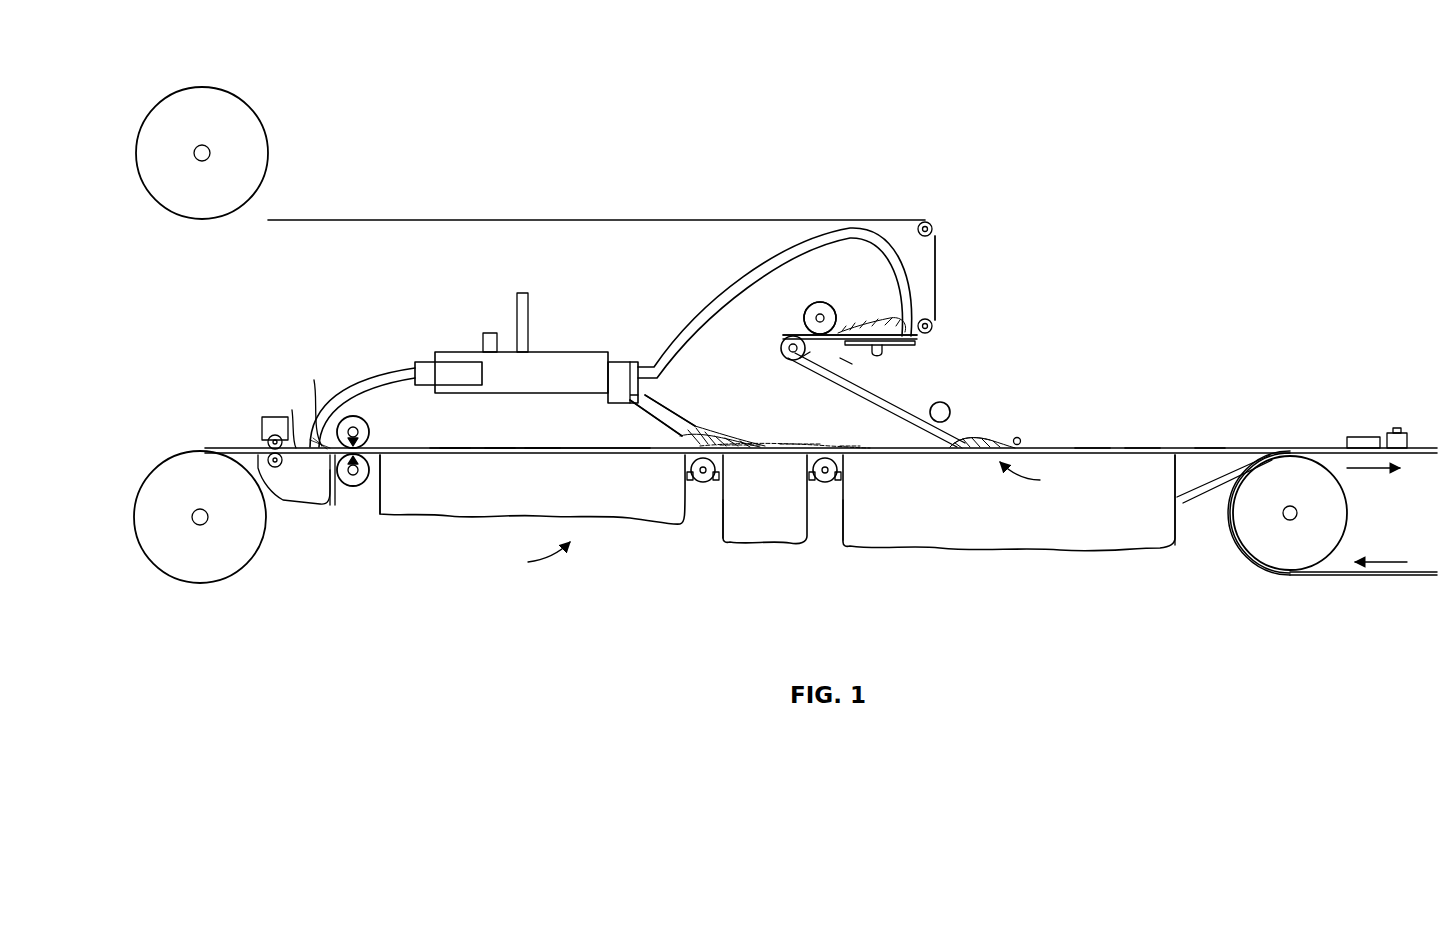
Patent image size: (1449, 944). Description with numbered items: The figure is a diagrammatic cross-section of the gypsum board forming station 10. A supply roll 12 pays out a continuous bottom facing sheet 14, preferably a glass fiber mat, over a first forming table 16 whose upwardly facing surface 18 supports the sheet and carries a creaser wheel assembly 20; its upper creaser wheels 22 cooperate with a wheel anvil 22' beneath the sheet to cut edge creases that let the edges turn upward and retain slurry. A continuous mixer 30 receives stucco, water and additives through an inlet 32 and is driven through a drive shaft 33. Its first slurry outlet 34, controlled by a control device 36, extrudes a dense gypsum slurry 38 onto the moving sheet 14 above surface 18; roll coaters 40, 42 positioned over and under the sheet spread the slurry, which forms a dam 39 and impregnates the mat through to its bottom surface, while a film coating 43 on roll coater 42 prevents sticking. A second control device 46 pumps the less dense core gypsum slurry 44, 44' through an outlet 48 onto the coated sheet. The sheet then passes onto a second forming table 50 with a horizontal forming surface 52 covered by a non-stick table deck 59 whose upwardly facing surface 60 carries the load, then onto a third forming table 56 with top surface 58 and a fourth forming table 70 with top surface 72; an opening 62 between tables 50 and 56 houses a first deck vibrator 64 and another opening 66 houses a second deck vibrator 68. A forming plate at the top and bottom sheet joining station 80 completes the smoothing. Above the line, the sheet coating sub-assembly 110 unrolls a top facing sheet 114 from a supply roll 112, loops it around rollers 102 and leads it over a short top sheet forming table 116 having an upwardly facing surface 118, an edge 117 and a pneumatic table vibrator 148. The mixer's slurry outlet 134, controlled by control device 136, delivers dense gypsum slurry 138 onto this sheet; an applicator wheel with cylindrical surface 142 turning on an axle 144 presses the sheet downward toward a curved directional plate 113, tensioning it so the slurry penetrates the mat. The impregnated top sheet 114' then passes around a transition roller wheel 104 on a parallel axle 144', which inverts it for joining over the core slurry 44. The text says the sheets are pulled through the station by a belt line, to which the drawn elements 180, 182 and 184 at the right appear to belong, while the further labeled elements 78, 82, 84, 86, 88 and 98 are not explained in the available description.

The board forming station 10 is at (530, 558).
The supply roll 12 is at (160, 555).
The bottom facing sheet 14 is at (582, 455).
The first forming table 16 is at (330, 505).
The upwardly facing surface 18 is at (284, 416).
The creaser wheel assembly 20 is at (272, 417).
The creaser wheels 22 is at (239, 430).
The wheel anvil 22' is at (286, 494).
The continuous mixer 30 is at (560, 352).
The inlet 32 is at (490, 333).
The drive shaft 33 is at (522, 293).
The first slurry outlet 34 is at (360, 382).
The control device 36 is at (462, 362).
The dense gypsum slurry 38 is at (310, 400).
The dam 39 is at (330, 482).
The roll coater 40 is at (370, 425).
The roll coater 42 is at (372, 490).
The film coating 43 is at (380, 470).
The core gypsum slurry 44 is at (722, 415).
The fiber stream 44' is at (968, 469).
The control device 46 is at (636, 395).
The outlet 48 is at (632, 420).
The second forming table 50 is at (520, 499).
The horizontal forming surface 52 is at (448, 447).
The third forming table 56 is at (780, 519).
The top surface 58 is at (792, 456).
The non-stick table deck 59 is at (494, 447).
The upwardly facing surface 60 is at (540, 447).
The opening 62 is at (700, 528).
The first deck vibrator 64 is at (690, 470).
The opening 66 is at (826, 530).
The second deck vibrator 68 is at (838, 470).
The fourth forming table 70 is at (1025, 522).
The top surface 72 is at (1090, 447).
The support 78 is at (1176, 470).
The top and bottom sheet joining station 80 is at (1036, 478).
The roller 82 is at (951, 408).
The fiber layer 84 is at (982, 440).
The web portion 86 is at (1140, 447).
The roller 88 is at (1022, 441).
The sensor unit 98 is at (1400, 428).
The rollers 102 is at (932, 224).
The transition roller wheel 104 is at (790, 340).
The sheet coating station sub-assembly 110 is at (822, 296).
The supply roll 112 is at (202, 86).
The directional plate 113 is at (810, 354).
The top facing sheet 114 is at (596, 203).
The impregnated top sheet 114' is at (876, 400).
The top sheet forming table 116 is at (900, 345).
The edge 117 is at (852, 362).
The upwardly facing surface 118 is at (937, 320).
The slurry outlet 134 is at (722, 302).
The control device 136 is at (626, 362).
The dense gypsum slurry 138 is at (884, 326).
The cylindrical surface 142 is at (828, 308).
The axle 144 is at (806, 301).
The axle 144' is at (759, 343).
The pneumatic table vibrator 148 is at (878, 356).
The conveyor belt 180 is at (1277, 580).
The belt roller 182 is at (1340, 515).
The belt return run 184 is at (1383, 578).